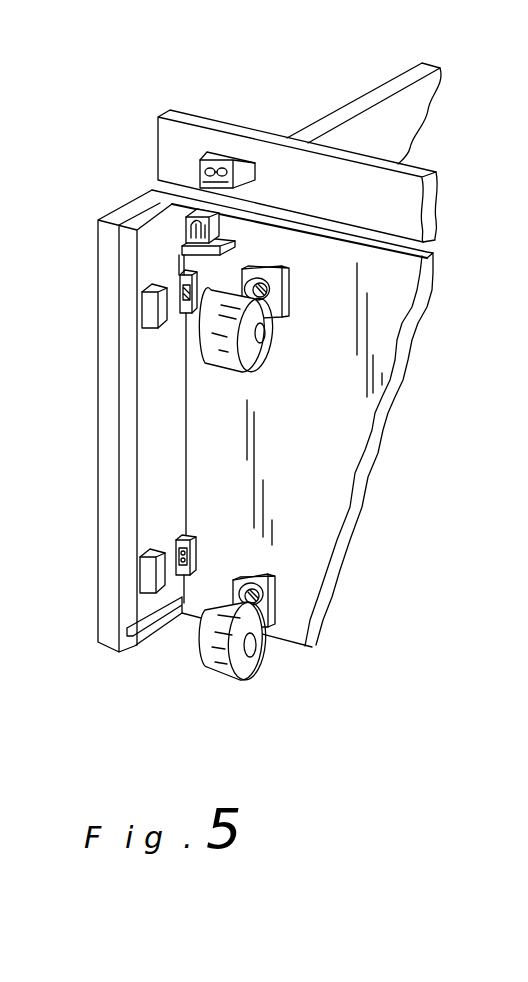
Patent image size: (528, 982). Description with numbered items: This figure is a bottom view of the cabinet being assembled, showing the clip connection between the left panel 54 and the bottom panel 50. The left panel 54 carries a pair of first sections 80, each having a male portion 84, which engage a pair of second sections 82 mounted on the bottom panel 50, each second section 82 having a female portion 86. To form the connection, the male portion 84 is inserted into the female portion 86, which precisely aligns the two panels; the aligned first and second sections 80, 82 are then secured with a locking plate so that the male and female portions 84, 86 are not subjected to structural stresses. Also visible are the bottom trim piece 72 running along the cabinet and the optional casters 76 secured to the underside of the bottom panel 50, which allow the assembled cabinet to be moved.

The bottom panel 50 is at (343, 475).
The left panel 54 is at (410, 120).
The bottom trim piece 72 is at (407, 203).
The casters 76 is at (266, 346).
The first section 80 is at (238, 243).
The second section 82 is at (213, 157).
The male portion 84 is at (222, 232).
The female portion 86 is at (227, 163).